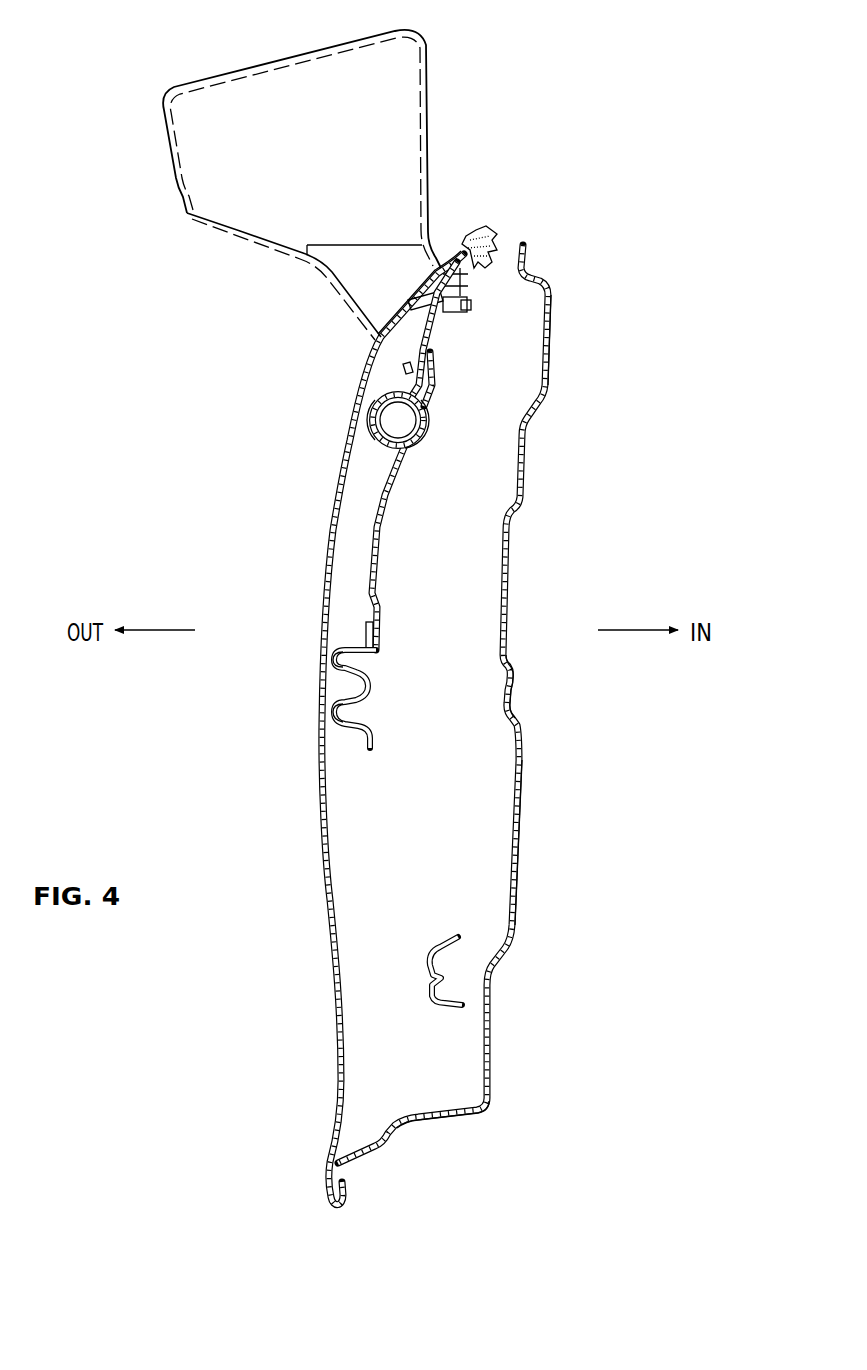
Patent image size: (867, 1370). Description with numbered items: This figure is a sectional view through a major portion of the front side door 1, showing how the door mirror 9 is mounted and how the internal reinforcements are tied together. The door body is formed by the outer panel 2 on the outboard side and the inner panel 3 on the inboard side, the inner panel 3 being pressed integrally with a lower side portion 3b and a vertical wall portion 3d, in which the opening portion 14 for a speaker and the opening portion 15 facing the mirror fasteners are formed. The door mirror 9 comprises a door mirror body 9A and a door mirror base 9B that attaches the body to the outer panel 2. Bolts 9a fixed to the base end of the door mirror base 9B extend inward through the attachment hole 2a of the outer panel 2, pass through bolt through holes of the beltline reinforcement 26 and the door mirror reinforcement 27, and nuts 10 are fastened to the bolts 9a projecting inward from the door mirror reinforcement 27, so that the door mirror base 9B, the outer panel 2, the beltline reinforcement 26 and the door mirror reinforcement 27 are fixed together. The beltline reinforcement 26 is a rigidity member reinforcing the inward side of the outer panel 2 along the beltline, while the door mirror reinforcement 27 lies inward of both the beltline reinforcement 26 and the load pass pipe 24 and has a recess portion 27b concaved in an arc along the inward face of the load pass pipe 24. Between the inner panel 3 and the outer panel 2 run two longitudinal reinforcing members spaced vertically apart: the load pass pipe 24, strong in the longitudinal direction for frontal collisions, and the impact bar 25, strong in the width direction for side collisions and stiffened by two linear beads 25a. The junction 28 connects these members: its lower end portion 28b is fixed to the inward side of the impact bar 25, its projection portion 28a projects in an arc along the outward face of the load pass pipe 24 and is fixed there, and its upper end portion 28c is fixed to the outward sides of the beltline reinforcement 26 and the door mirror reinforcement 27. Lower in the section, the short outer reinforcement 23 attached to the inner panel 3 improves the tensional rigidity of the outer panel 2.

The front side door 1 is at (293, 467).
The outer panel 2 is at (333, 520).
The attachment hole 2a is at (400, 322).
The inner panel 3 is at (512, 533).
The lower side portion 3b is at (440, 1120).
The vertical wall portion 3d is at (520, 698).
The door mirror 9 is at (300, 135).
The door mirror body 9A is at (311, 136).
The door mirror base 9B is at (365, 262).
The bolt 9a is at (470, 305).
The nut 10 is at (443, 315).
The opening portion 14 is at (519, 853).
The opening portion 15 is at (550, 330).
The outer reinforcement 23 is at (430, 965).
The load pass pipe 24 is at (418, 400).
The impact bar 25 is at (377, 700).
The linear bead 25a is at (334, 717).
The beltline reinforcement 26 is at (423, 348).
The door mirror reinforcement 27 is at (436, 378).
The recess portion 27b is at (430, 436).
The junction 28 is at (382, 553).
The projection portion 28a is at (372, 432).
The lower end portion 28b is at (380, 640).
The upper end portion 28c is at (404, 372).